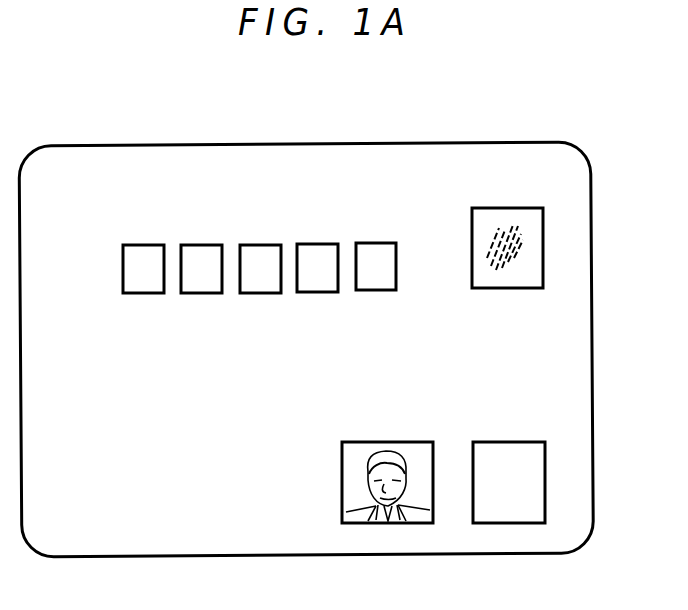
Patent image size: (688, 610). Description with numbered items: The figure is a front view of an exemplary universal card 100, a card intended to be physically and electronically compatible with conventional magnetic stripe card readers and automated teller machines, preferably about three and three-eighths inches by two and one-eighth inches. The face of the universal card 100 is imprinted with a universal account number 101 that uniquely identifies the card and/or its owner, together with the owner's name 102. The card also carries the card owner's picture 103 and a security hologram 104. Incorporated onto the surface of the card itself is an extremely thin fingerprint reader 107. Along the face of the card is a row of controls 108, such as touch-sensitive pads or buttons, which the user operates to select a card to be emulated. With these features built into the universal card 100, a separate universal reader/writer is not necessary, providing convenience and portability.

The universal card 100 is at (310, 142).
The universal account number 101 is at (151, 327).
The owner's name 102 is at (167, 495).
The card owner's picture 103 is at (390, 441).
The security hologram 104 is at (512, 441).
The fingerprint reader 107 is at (509, 206).
The controls 108 is at (104, 240).